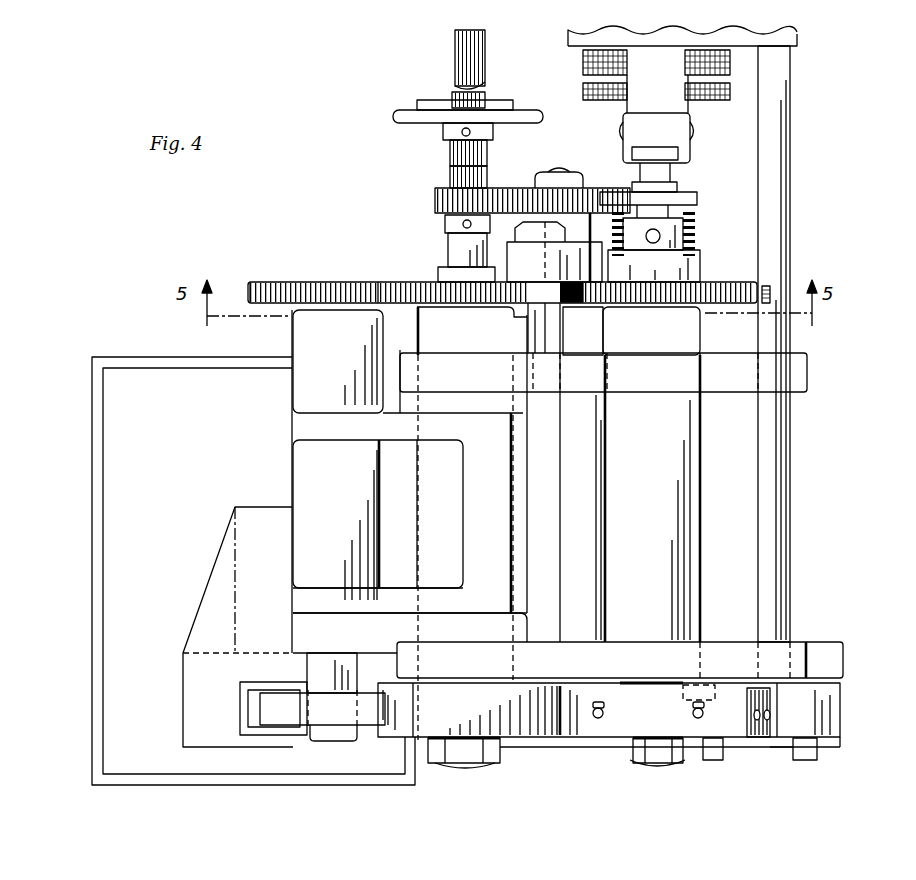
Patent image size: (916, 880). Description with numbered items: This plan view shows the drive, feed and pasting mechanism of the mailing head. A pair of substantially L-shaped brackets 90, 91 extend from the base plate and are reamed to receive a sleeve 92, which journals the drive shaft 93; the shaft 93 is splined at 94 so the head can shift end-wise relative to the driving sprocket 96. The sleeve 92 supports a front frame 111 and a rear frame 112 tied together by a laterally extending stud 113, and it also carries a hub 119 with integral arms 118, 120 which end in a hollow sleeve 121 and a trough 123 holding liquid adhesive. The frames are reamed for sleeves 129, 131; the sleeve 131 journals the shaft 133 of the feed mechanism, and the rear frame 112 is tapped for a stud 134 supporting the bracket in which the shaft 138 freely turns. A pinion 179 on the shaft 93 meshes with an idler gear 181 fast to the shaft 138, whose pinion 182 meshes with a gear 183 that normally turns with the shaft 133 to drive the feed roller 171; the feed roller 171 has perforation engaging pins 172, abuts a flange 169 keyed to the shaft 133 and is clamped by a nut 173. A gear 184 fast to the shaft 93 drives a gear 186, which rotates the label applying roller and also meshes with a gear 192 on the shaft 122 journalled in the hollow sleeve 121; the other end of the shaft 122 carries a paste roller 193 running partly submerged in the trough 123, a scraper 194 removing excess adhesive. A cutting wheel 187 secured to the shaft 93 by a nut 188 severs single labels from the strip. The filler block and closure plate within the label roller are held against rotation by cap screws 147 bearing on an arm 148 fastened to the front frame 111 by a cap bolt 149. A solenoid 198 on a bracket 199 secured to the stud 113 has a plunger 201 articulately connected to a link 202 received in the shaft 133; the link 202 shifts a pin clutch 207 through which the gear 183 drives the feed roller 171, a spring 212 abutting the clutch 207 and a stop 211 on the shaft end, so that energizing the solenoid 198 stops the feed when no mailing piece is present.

The spline 94 is at (455, 48).
The driving sprocket 96 is at (428, 118).
The pinion 179 is at (435, 195).
The idler gear 181 is at (505, 190).
The shaft 138 is at (556, 172).
The shaft 93 is at (453, 238).
The solenoid 198 is at (590, 68).
The bracket 199 is at (797, 40).
The plunger 201 is at (690, 110).
The link 202 is at (690, 162).
The stop 211 is at (685, 190).
The spring 212 is at (695, 218).
The pin clutch 207 is at (686, 257).
The gear 183 is at (702, 290).
The gear 186 is at (770, 295).
The gear 192 is at (268, 282).
The gear 184 is at (390, 285).
The sleeve 92 is at (432, 322).
The pinion 182 is at (568, 313).
The stud 134 is at (553, 340).
The L-shaped bracket 91 is at (520, 400).
The rear frame 112 is at (688, 378).
The hollow sleeve 121 is at (290, 458).
The arm 118 is at (395, 428).
The hub 119 is at (440, 485).
The sleeve 129 is at (581, 502).
The sleeve 131 is at (677, 512).
The stud 113 is at (777, 447).
The arm 120 is at (395, 594).
The L-shaped bracket 90 is at (512, 625).
The front frame 111 is at (730, 650).
The trough 123 is at (94, 506).
The scraper 194 is at (183, 688).
The paste roller 193 is at (300, 718).
The shaft 122 is at (335, 735).
The cutting wheel 187 is at (428, 740).
The nut 188 is at (490, 755).
The feed roller 171 is at (575, 737).
The flange 169 is at (612, 740).
The perforation engaging pins 172 is at (600, 708).
The nut 173 is at (640, 760).
The shaft 133 is at (656, 770).
The cap screws 147 is at (723, 750).
The arm 148 is at (785, 745).
The cap bolt 149 is at (817, 750).